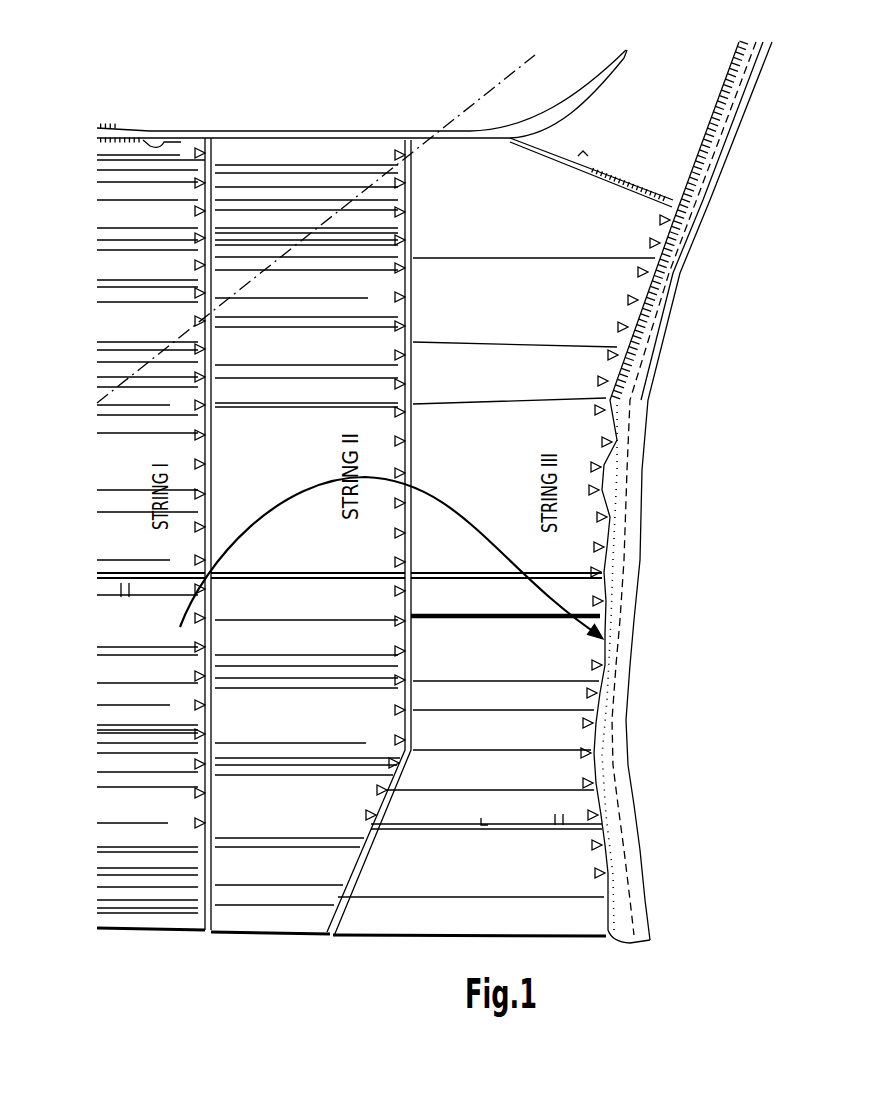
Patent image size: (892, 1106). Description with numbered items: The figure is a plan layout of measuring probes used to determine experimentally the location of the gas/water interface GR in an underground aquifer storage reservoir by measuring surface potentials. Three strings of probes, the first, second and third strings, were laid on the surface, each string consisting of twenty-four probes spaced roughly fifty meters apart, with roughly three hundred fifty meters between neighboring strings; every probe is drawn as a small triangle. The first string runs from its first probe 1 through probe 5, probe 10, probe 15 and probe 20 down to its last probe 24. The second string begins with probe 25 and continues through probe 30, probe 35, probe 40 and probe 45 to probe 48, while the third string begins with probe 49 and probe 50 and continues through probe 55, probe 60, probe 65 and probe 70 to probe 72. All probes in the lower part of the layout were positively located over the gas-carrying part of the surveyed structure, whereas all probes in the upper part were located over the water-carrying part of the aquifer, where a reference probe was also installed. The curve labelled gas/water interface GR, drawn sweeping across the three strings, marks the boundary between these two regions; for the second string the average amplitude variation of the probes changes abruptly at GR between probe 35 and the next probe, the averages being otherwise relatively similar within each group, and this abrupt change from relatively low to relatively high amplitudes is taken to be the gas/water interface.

The measuring probe 1 is at (181, 142).
The measuring probe 5 is at (195, 265).
The measuring probe 10 is at (170, 405).
The measuring probe 15 is at (170, 560).
The measuring probe 20 is at (170, 705).
The measuring probe 24 is at (168, 823).
The measuring probe 25 is at (395, 155).
The measuring probe 30 is at (368, 298).
The measuring probe 35 is at (395, 441).
The measuring probe 40 is at (395, 591).
The measuring probe 45 is at (366, 743).
The measuring probe 48 is at (365, 815).
The measuring probe 49 is at (659, 220).
The measuring probe 50 is at (649, 243).
The measuring probe 55 is at (598, 381).
The measuring probe 60 is at (597, 517).
The measuring probe 65 is at (591, 665).
The measuring probe 70 is at (586, 815).
The measuring probe 72 is at (594, 873).
The gas/water interface GR is at (463, 492).